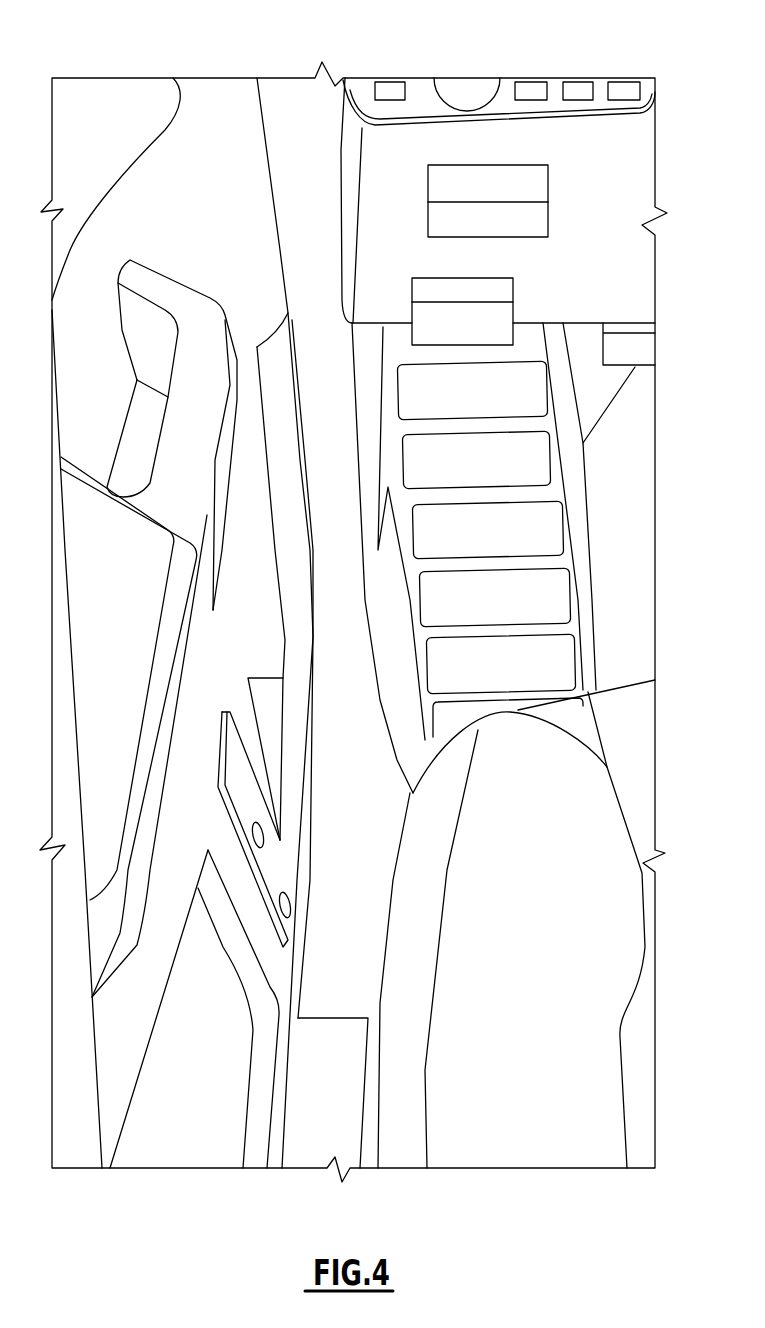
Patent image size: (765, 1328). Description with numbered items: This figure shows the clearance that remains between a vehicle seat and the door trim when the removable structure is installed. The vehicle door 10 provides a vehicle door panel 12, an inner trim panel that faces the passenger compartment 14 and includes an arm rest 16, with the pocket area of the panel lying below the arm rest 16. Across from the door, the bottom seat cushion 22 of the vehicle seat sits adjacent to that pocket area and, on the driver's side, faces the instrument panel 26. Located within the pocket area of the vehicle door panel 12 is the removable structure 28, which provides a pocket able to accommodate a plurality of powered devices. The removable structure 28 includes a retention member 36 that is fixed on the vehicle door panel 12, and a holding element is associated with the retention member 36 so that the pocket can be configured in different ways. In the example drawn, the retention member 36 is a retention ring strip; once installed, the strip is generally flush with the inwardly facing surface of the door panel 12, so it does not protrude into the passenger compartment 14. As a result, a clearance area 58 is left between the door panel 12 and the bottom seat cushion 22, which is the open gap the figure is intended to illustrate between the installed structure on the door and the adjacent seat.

The vehicle door 10 is at (150, 92).
The vehicle door panel 12 is at (247, 568).
The passenger compartment 14 is at (533, 598).
The arm rest 16 is at (203, 345).
The bottom seat cushion 22 is at (550, 803).
The instrument panel 26 is at (417, 100).
The removable structure 28 is at (225, 845).
The retention member 36 is at (275, 873).
The clearance area 58 is at (323, 1097).